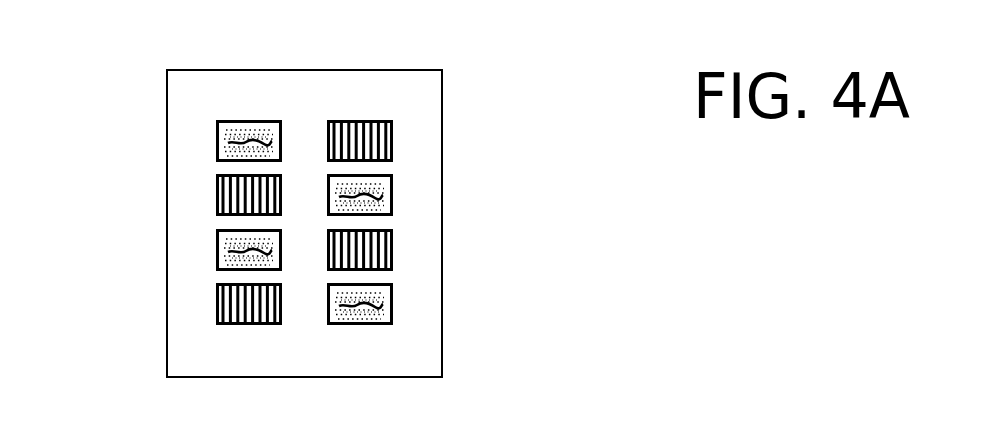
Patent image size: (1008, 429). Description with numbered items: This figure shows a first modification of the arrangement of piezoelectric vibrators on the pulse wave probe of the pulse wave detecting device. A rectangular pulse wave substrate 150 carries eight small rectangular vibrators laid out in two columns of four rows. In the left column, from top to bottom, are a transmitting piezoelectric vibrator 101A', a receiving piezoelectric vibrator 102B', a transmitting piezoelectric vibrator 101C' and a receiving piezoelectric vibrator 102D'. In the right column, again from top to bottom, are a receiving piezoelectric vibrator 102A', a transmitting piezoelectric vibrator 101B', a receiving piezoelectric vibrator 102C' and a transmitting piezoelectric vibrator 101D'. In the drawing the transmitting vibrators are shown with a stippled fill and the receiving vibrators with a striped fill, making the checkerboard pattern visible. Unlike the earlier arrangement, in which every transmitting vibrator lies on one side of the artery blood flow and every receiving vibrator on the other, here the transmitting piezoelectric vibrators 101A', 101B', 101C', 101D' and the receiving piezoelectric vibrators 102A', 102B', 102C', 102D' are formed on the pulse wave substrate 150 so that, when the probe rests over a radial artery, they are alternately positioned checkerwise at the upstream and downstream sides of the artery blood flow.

The pulse wave substrate 150 is at (417, 363).
The transmitting piezoelectric vibrator 101A' is at (164, 138).
The receiving piezoelectric vibrator 102A' is at (438, 138).
The receiving piezoelectric vibrator 102B' is at (164, 195).
The transmitting piezoelectric vibrator 101B' is at (438, 192).
The transmitting piezoelectric vibrator 101C' is at (162, 246).
The receiving piezoelectric vibrator 102C' is at (438, 246).
The receiving piezoelectric vibrator 102D' is at (164, 300).
The transmitting piezoelectric vibrator 101D' is at (438, 300).